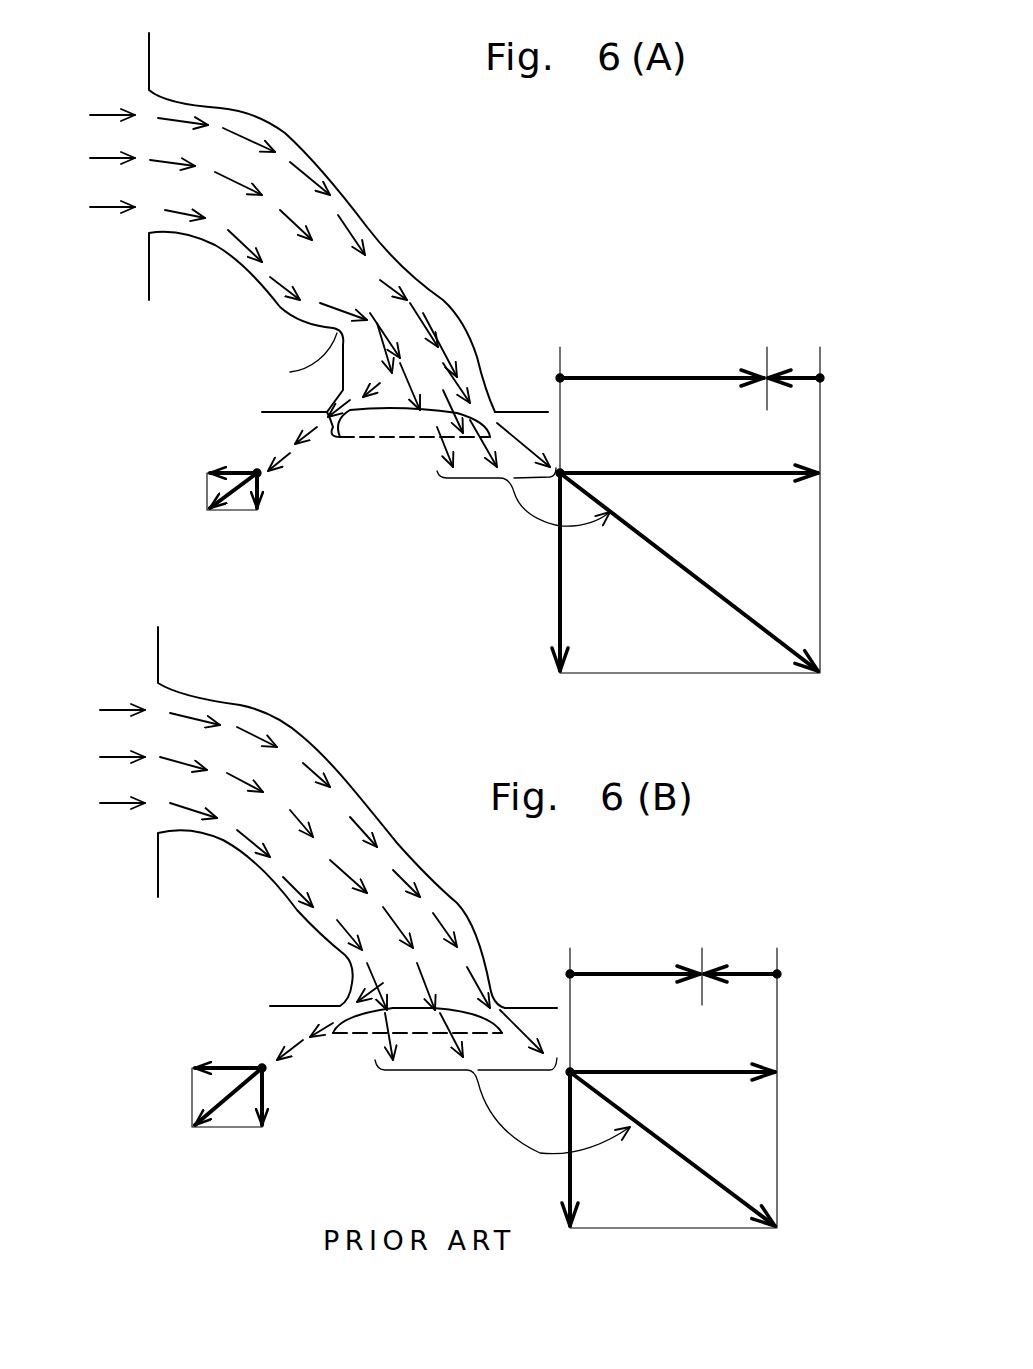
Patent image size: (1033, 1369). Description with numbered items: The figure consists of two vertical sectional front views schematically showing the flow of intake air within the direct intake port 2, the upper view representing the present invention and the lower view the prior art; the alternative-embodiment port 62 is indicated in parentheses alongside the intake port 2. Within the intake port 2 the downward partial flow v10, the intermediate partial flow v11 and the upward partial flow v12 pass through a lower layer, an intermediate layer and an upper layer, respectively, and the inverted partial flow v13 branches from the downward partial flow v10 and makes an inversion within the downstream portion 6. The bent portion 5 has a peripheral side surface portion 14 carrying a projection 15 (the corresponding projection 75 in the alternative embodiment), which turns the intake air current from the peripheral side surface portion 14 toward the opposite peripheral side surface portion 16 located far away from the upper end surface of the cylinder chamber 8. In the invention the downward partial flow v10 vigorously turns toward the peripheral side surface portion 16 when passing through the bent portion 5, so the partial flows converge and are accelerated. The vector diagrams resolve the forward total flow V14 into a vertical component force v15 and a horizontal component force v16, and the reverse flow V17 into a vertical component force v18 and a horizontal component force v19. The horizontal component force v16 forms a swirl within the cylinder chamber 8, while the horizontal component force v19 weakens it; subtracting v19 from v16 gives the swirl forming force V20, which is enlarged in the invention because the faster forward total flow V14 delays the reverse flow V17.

In FIG. 6A, the intake port 2 is at (322, 211).
In FIG. 6B, the intake port 2 is at (203, 697).
In FIG. 6A, the direct intake port 62 is at (227, 103).
In FIG. 6A, the bent portion 5 is at (380, 283).
In FIG. 6B, the bent portion 5 is at (423, 930).
In FIG. 6A, the downstream portion 6 is at (457, 357).
In FIG. 6A, the cylinder chamber 8 is at (530, 425).
In FIG. 6B, the cylinder chamber 8 is at (542, 1020).
In FIG. 6A, the peripheral side surface portion 14 is at (330, 335).
In FIG. 6A, the projection 15 is at (257, 363).
In FIG. 6A, the projection 75 is at (313, 352).
In FIG. 6A, the opposite peripheral side surface portion 16 is at (413, 273).
In FIG. 6A, the downward partial flow v10 is at (240, 243).
In FIG. 6B, the downward partial flow v10 is at (250, 837).
In FIG. 6A, the intermediate partial flow v11 is at (240, 183).
In FIG. 6A, the upward partial flow v12 is at (250, 137).
In FIG. 6B, the upward partial flow v12 is at (253, 730).
In FIG. 6A, the inverted partial flow v13 is at (377, 393).
In FIG. 6B, the inverted partial flow v13 is at (253, 777).
In FIG. 6A, the forward total flow V14 is at (720, 590).
In FIG. 6B, the forward total flow V14 is at (707, 1177).
In FIG. 6A, the vertical component force v15 is at (563, 595).
In FIG. 6B, the vertical component force v15 is at (573, 1177).
In FIG. 6A, the horizontal component force v16 is at (663, 467).
In FIG. 6B, the horizontal component force v16 is at (667, 1070).
In FIG. 6A, the reverse flow V17 is at (243, 510).
In FIG. 6B, the reverse flow V17 is at (233, 1100).
In FIG. 6A, the vertical component force v18 is at (260, 487).
In FIG. 6B, the vertical component force v18 is at (267, 1097).
In FIG. 6A, the horizontal component force v19 is at (243, 465).
In FIG. 6B, the horizontal component force v19 is at (230, 1060).
In FIG. 6A, the swirl forming force V20 is at (662, 373).
In FIG. 6B, the swirl forming force V20 is at (633, 970).